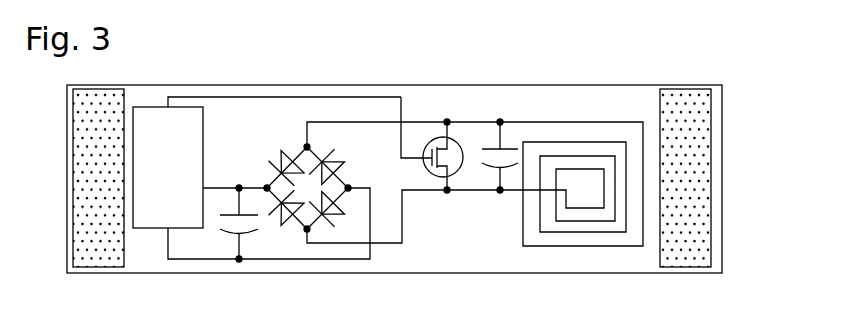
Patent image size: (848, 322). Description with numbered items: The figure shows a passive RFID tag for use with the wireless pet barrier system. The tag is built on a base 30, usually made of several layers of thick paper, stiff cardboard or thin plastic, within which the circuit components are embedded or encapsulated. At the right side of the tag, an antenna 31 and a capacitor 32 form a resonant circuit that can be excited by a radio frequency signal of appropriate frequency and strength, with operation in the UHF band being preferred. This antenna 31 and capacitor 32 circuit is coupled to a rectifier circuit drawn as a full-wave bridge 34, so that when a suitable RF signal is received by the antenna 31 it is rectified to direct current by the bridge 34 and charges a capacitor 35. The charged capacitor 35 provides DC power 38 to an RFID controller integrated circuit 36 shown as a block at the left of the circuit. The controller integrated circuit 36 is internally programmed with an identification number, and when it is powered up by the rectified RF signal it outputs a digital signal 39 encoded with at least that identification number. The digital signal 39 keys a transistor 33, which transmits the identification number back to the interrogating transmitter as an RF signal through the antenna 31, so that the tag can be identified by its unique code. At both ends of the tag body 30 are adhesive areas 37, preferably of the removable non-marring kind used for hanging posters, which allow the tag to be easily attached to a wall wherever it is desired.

The base 30 is at (720, 85).
The antenna 31 is at (588, 132).
The capacitor 32 is at (507, 143).
The transistor 33 is at (455, 137).
The full-wave bridge 34 is at (311, 163).
The capacitor 35 is at (227, 235).
The RFID controller integrated circuit 36 is at (162, 132).
The adhesive areas 37 is at (78, 158).
The DC power 38 is at (218, 187).
The digital signal 39 is at (255, 97).